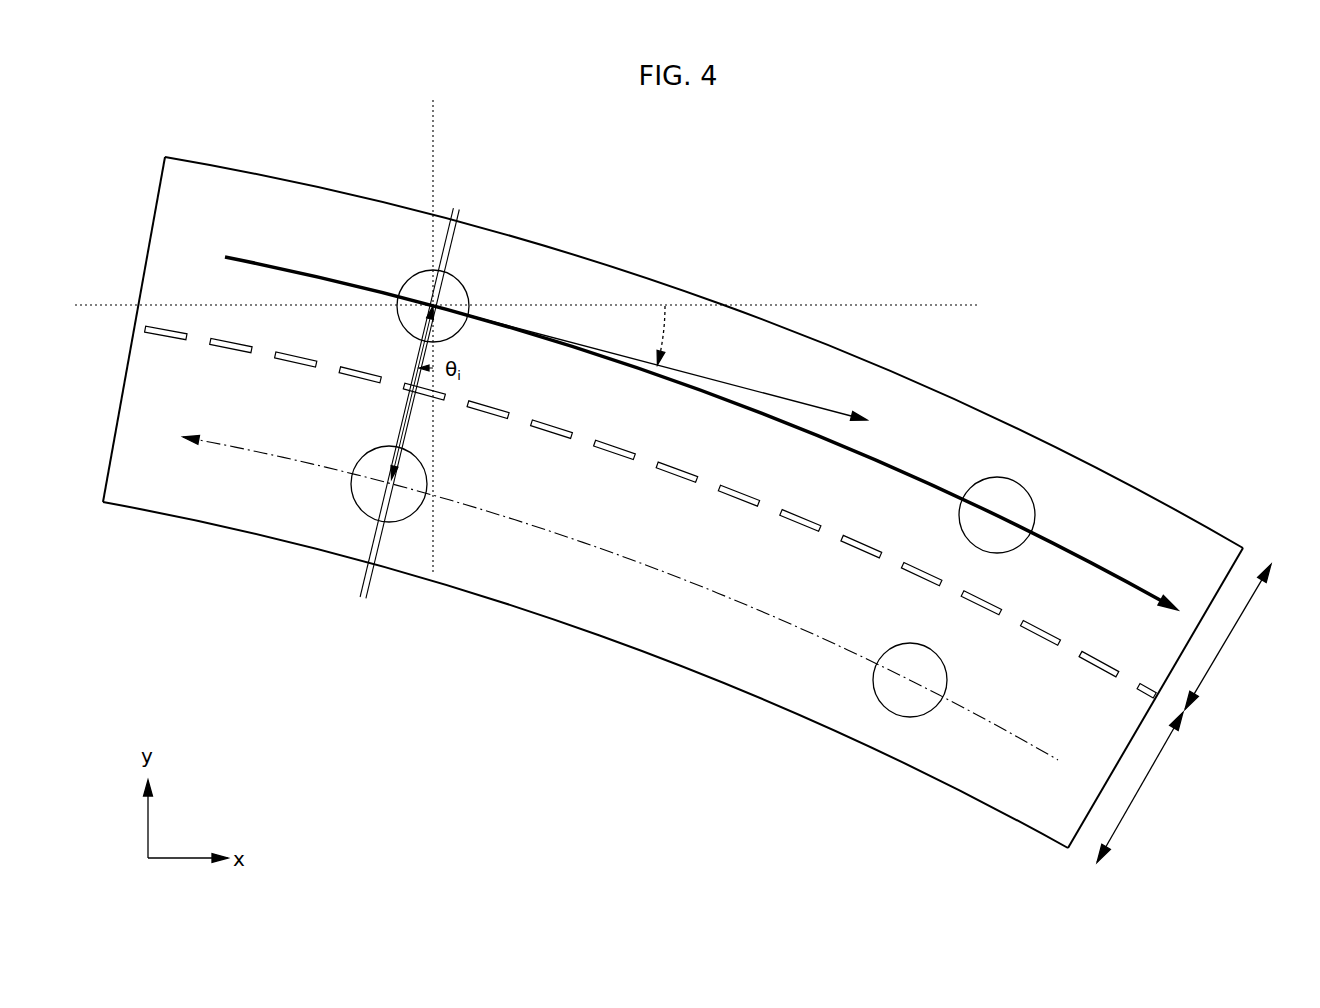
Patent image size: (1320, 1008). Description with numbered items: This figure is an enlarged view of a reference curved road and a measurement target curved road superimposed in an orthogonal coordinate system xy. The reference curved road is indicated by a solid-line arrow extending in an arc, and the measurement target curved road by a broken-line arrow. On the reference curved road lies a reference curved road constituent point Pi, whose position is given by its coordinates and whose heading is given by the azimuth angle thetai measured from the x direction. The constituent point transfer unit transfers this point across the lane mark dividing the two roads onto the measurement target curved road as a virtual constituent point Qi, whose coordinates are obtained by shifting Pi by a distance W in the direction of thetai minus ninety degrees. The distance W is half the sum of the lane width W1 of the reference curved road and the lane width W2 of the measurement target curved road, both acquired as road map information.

The reference curved road constituent point Pi is at (443, 298).
The virtual constituent point Qi is at (385, 490).
The transfer distance W is at (393, 418).
The lane width of the reference curved road W1 is at (1228, 636).
The lane width of the measurement target curved road W2 is at (1141, 787).
The azimuth angle thetai is at (674, 335).